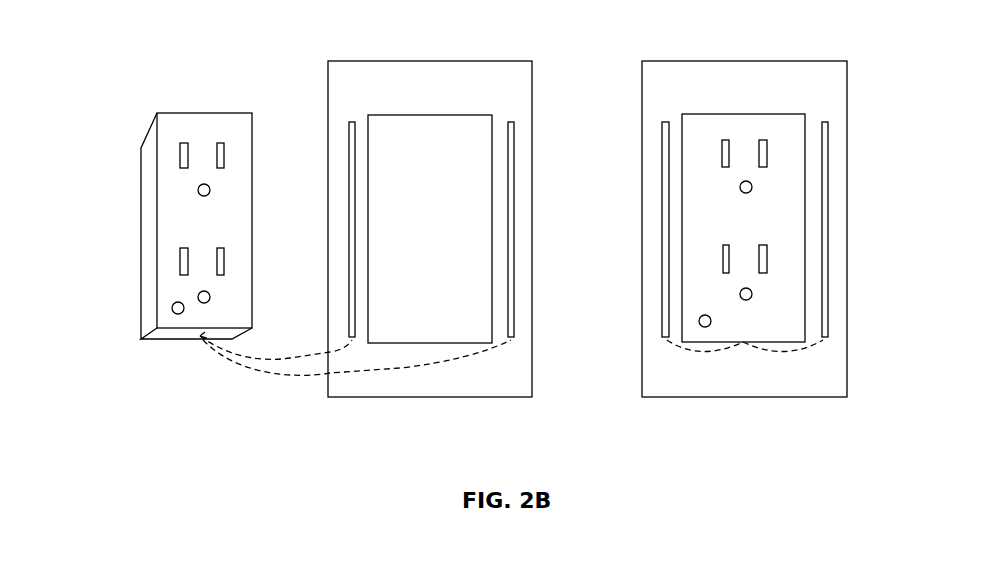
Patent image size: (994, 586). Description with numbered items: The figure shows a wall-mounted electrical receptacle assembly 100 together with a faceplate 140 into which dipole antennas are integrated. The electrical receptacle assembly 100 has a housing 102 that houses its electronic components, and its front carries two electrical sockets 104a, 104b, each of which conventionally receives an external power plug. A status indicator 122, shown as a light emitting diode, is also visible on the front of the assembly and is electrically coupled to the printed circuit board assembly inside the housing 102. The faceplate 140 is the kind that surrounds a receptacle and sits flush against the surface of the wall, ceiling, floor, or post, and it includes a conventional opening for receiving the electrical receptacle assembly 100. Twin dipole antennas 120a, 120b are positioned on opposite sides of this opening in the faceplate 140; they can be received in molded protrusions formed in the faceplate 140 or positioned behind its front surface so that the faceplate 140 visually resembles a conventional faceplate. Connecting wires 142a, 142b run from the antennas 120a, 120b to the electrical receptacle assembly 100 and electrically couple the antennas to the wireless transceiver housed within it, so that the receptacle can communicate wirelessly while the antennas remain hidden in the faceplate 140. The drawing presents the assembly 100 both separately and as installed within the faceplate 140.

The electrical receptacle assembly 100 is at (126, 93).
The housing 102 is at (210, 113).
The electrical socket 104a is at (178, 160).
The electrical socket 104b is at (178, 265).
The status indicator 122 is at (177, 315).
The faceplate 140 is at (487, 397).
The dipole antenna 120a is at (352, 120).
The dipole antenna 120b is at (512, 120).
The connecting wire 142a is at (274, 357).
The connecting wire 142b is at (285, 372).